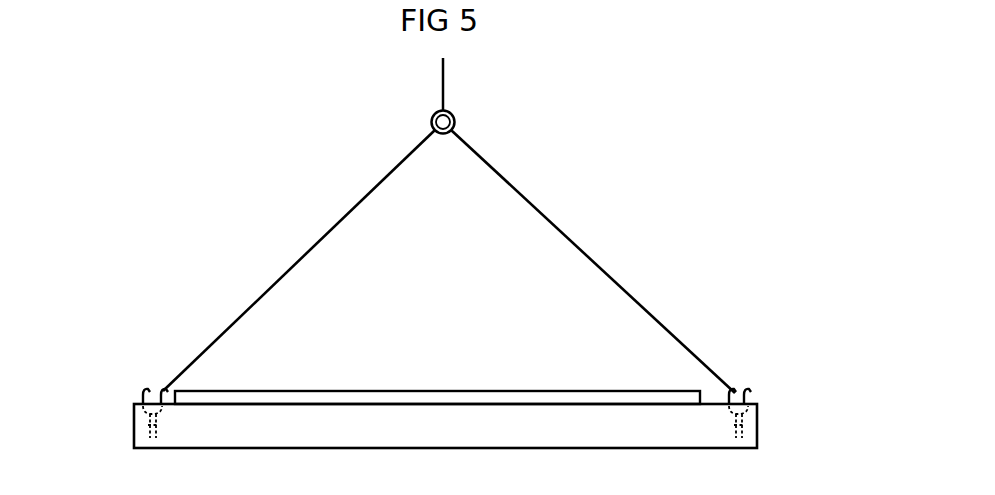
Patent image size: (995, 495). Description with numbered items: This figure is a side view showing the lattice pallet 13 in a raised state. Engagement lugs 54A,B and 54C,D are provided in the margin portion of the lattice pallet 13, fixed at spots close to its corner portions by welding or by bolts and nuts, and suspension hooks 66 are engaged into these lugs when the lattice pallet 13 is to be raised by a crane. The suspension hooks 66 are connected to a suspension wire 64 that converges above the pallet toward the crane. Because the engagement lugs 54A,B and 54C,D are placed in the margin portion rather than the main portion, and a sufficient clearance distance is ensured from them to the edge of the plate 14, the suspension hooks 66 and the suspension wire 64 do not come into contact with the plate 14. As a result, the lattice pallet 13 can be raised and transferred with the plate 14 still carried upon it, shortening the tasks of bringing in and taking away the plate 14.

The lattice pallet 13 is at (335, 415).
The plate 14 is at (460, 391).
The suspension wire 64 is at (538, 214).
The suspension hooks 66 is at (146, 394).
The engagement lugs 54A,B is at (152, 427).
The engagement lugs 54C,D is at (742, 420).